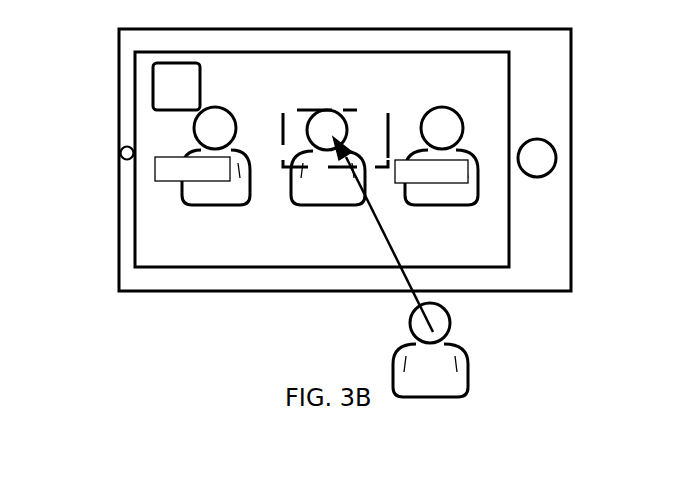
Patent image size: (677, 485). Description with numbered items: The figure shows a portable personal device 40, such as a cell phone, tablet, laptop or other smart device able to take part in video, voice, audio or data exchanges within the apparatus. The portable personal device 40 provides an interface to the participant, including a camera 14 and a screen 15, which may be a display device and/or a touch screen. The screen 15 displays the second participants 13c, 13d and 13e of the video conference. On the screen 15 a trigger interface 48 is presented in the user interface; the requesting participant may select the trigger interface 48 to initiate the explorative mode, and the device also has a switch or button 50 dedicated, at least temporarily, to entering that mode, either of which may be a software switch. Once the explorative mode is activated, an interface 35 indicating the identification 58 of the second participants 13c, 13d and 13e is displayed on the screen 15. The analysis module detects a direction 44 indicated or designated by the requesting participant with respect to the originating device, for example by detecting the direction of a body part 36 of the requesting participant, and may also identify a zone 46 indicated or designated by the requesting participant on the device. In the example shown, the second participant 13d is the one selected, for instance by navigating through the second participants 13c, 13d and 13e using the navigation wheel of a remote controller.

The portable personal device 40 is at (394, 160).
The screen 15 is at (150, 118).
The camera 14 is at (119, 158).
The trigger interface 48 is at (153, 84).
The second participant 13e is at (237, 132).
The second participant 13d is at (342, 130).
The second participant 13c is at (452, 206).
The interface 35 is at (174, 164).
The identification 58 is at (192, 181).
The zone 46 is at (302, 110).
The button or switch 50 is at (550, 167).
The body part 36 is at (445, 337).
The direction 44 is at (438, 306).